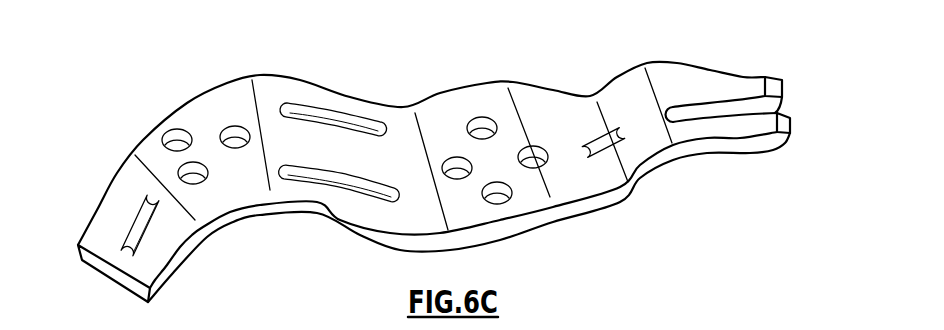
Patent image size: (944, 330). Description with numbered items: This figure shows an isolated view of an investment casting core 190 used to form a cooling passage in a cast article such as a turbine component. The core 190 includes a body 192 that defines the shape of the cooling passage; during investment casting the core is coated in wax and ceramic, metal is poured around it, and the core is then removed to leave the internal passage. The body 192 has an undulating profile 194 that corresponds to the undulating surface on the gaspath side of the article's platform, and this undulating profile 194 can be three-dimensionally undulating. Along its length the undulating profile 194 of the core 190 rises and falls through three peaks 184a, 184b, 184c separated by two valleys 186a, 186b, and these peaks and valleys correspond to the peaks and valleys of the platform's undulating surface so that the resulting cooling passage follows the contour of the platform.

The investment casting core 190 is at (113, 183).
The peak 184a is at (220, 83).
The peak 184b is at (503, 85).
The peak 184c is at (658, 60).
The valley 186a is at (403, 105).
The valley 186b is at (590, 93).
The body 192 is at (428, 127).
The undulating profile 194 is at (547, 87).